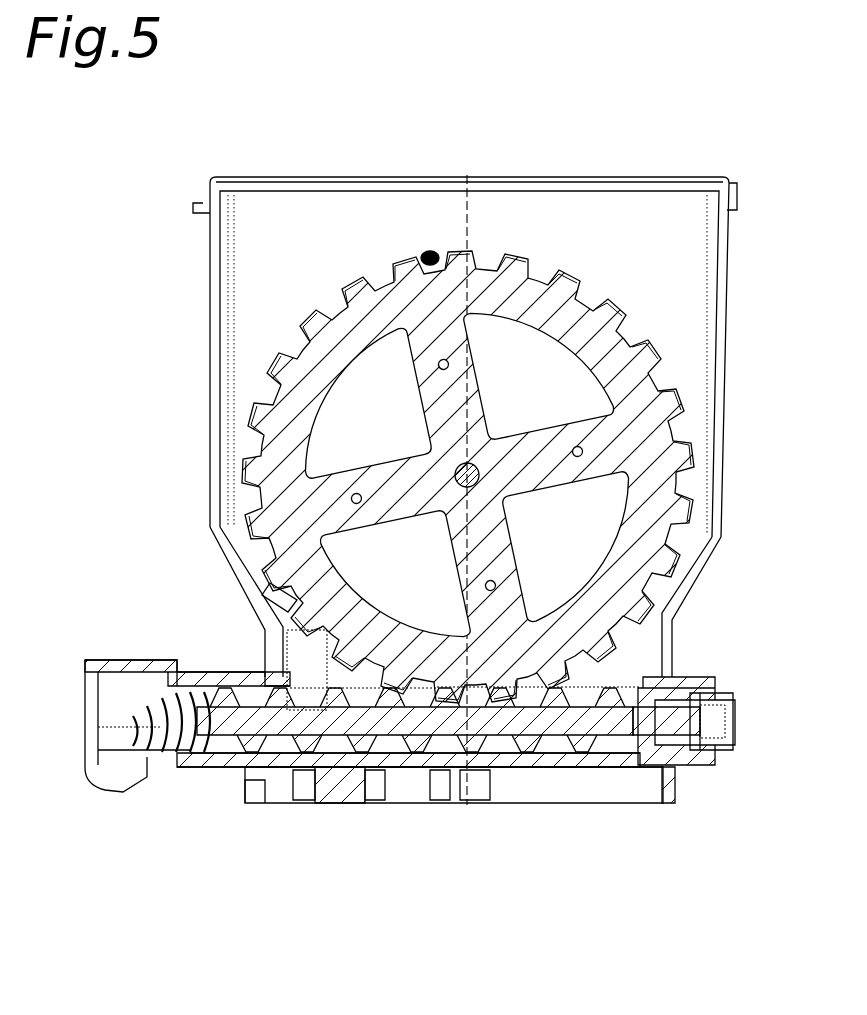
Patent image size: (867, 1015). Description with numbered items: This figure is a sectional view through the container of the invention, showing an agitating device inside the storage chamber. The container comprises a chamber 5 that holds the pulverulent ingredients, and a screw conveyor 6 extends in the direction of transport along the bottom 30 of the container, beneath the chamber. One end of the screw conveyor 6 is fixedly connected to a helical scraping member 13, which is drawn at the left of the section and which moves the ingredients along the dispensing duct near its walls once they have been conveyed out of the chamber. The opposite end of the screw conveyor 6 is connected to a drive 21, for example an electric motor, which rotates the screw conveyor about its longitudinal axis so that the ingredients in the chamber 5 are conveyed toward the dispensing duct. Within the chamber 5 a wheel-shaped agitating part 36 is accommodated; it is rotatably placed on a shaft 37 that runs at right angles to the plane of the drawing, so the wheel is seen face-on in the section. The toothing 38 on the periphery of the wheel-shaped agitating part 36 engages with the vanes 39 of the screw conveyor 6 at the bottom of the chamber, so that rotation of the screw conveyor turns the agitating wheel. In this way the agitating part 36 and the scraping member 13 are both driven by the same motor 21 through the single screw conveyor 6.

The chamber 5 is at (253, 305).
The screw conveyor 6 is at (548, 722).
The helical scraping member 13 is at (148, 762).
The drive 21 is at (717, 694).
The bottom 30 is at (343, 775).
The wheel-shaped agitating part 36 is at (272, 455).
The shaft 37 is at (478, 473).
The toothing 38 is at (250, 510).
The vanes 39 is at (443, 695).